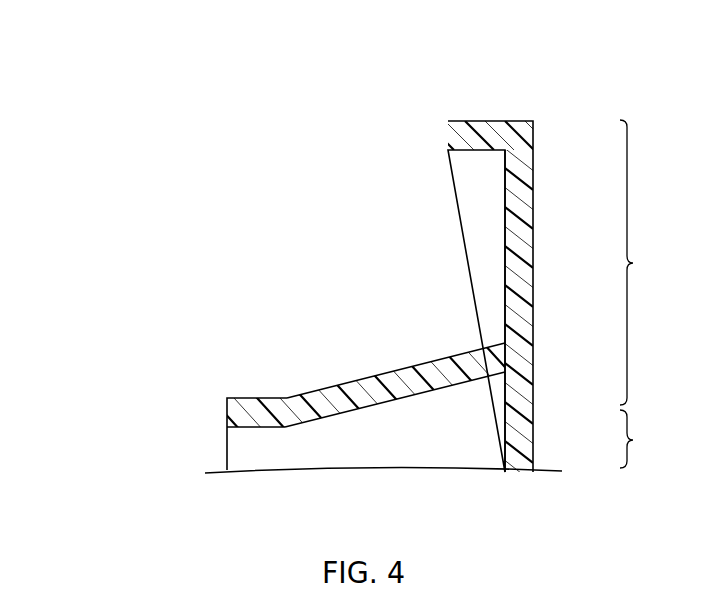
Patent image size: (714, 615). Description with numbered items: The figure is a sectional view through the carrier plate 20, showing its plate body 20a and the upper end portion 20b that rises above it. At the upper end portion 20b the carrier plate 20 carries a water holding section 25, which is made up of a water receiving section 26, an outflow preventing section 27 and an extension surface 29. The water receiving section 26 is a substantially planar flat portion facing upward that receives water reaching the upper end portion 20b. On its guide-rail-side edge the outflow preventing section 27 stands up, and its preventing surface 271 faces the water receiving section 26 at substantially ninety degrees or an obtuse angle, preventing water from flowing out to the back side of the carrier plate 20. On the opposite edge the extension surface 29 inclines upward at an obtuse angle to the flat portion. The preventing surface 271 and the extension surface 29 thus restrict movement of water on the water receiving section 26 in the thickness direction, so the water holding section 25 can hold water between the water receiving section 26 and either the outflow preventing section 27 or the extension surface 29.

The carrier plate 20 is at (360, 250).
The plate body 20a is at (655, 439).
The upper end portion 20b is at (650, 262).
The water holding section 25 is at (331, 280).
The water receiving section 26 is at (380, 373).
The outflow preventing section 27 is at (414, 280).
The preventing surface 271 is at (505, 249).
The extension surface 29 is at (242, 398).